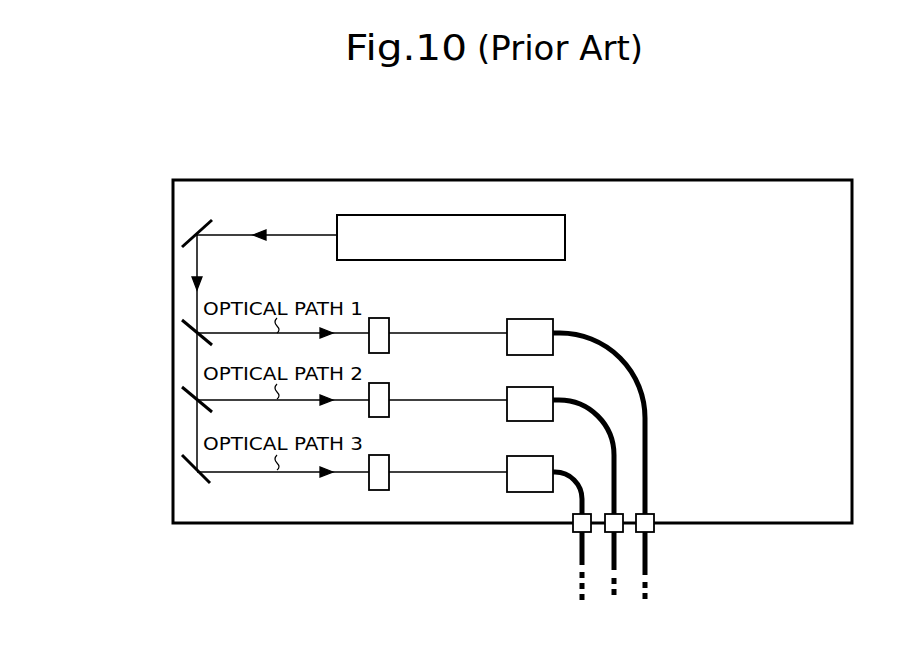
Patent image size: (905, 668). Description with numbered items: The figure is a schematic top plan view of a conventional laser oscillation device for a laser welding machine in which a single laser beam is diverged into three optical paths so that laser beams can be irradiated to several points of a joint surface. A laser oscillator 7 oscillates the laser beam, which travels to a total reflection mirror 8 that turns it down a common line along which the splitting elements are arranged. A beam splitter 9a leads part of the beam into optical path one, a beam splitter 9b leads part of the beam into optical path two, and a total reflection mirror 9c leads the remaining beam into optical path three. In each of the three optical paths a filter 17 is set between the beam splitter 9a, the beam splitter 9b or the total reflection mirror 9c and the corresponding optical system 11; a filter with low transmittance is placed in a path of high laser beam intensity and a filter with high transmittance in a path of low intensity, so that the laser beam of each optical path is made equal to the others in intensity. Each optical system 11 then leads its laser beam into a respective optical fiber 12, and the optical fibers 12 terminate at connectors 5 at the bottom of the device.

The laser oscillator 7 is at (565, 240).
The total reflection mirror 8 is at (205, 222).
The beam splitter 9a is at (185, 328).
The beam splitter 9b is at (185, 398).
The total reflection mirror 9c is at (190, 463).
The filter 17 is at (389, 390).
The optical system 11 is at (546, 464).
The optical fiber 12 is at (585, 490).
The connector 5 is at (591, 532).